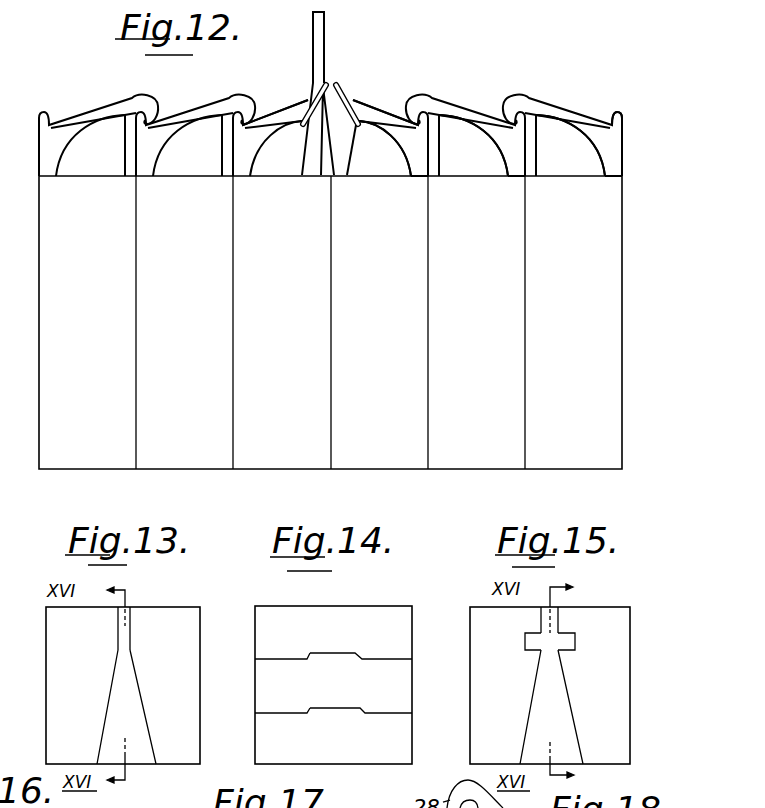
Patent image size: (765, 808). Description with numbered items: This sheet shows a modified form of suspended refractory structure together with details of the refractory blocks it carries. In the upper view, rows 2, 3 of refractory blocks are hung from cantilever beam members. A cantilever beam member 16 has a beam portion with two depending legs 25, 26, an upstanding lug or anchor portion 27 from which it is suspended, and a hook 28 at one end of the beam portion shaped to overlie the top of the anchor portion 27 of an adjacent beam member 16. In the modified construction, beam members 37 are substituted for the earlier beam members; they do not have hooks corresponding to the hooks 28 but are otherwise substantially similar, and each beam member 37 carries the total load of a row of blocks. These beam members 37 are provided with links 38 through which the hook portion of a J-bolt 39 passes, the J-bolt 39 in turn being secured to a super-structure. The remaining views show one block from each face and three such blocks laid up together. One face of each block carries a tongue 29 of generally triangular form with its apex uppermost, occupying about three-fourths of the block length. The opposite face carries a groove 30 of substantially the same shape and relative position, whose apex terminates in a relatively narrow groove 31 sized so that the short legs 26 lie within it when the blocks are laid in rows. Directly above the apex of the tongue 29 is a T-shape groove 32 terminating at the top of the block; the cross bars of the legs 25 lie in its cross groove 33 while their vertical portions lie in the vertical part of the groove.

In FIG. 12, the row of refractory blocks 2 is at (200, 506).
In FIG. 12, the row of refractory blocks 3 is at (468, 505).
In FIG. 12, the cantilever beam member 16 is at (475, 108).
In FIG. 12, the depending leg 25 is at (418, 168).
In FIG. 12, the depending leg 26 is at (347, 160).
In FIG. 12, the upstanding lug or anchor portion 27 is at (618, 114).
In FIG. 12, the hook 28 is at (503, 116).
In FIG. 14, the tongue 29 is at (307, 659).
In FIG. 15, the tongue 29 is at (565, 747).
In FIG. 13, the groove 30 is at (138, 758).
In FIG. 14, the groove 30 is at (355, 651).
In FIG. 13, the narrow groove 31 is at (127, 607).
In FIG. 15, the T-shape groove 32 is at (555, 612).
In FIG. 15, the cross groove 33 is at (570, 643).
In FIG. 12, the beam member 37 is at (275, 113).
In FIG. 12, the link 38 is at (316, 101).
In FIG. 12, the J-bolt 39 is at (325, 33).